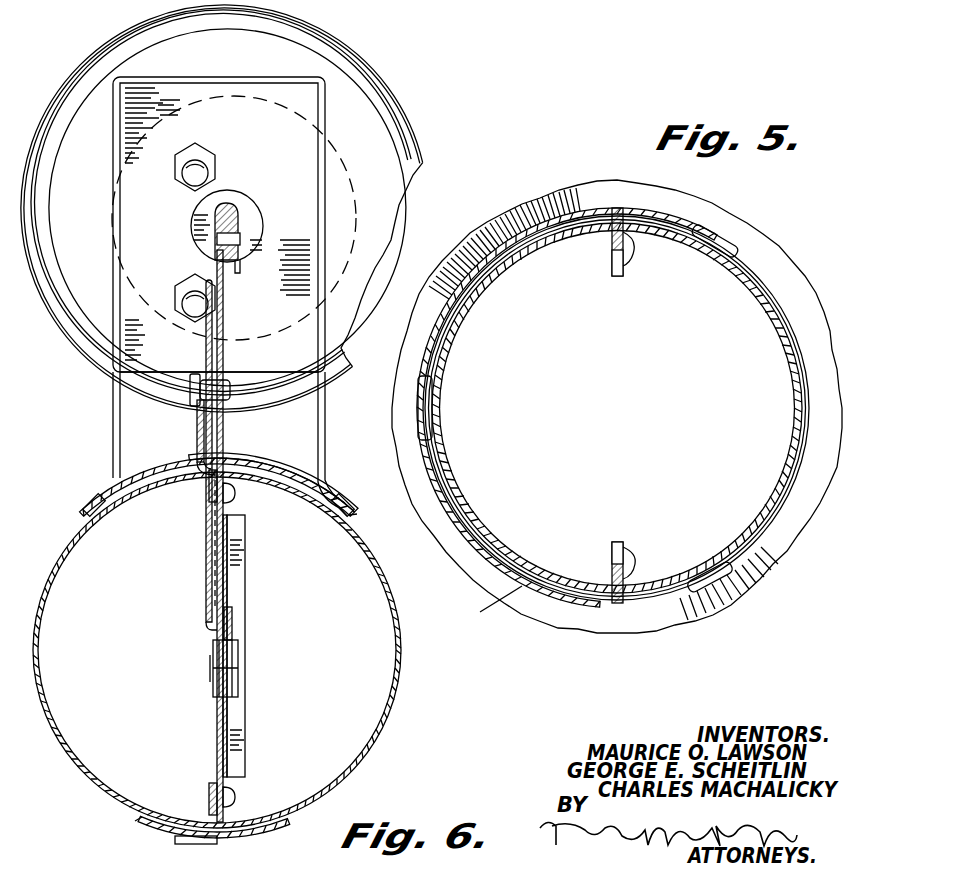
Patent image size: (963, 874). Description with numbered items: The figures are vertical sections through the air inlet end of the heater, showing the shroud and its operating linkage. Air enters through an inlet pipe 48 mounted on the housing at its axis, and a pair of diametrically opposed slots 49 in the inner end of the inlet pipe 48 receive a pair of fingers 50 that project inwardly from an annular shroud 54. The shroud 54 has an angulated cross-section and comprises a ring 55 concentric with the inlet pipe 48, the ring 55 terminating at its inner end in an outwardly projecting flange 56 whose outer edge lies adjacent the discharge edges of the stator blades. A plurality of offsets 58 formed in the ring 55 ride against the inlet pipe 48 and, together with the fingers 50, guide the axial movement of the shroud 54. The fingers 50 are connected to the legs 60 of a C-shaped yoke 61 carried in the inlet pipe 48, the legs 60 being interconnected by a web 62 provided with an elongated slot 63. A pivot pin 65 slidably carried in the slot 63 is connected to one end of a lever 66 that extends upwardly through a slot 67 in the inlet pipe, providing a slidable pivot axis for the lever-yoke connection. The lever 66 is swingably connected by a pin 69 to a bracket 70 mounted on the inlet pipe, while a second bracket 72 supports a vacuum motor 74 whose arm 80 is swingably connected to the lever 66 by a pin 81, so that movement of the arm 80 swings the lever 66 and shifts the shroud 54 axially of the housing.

In FIG. 6, the inlet pipe 48 is at (60, 548).
In FIG. 5, the inlet pipe 48 is at (762, 270).
In FIG. 5, the slots 49 is at (610, 232).
In FIG. 6, the fingers 50 is at (207, 482).
In FIG. 5, the fingers 50 is at (612, 264).
In FIG. 5, the annular shroud 54 is at (522, 586).
In FIG. 6, the ring 55 is at (135, 476).
In FIG. 5, the ring 55 is at (566, 602).
In FIG. 5, the flange 56 is at (590, 187).
In FIG. 5, the offsets 58 is at (724, 240).
In FIG. 6, the legs 60 is at (236, 492).
In FIG. 5, the legs 60 is at (629, 254).
In FIG. 6, the C-shaped yoke 61 is at (222, 736).
In FIG. 6, the web 62 is at (225, 567).
In FIG. 6, the elongated slot 63 is at (231, 636).
In FIG. 6, the pivot pin 65 is at (240, 668).
In FIG. 6, the lever 66 is at (206, 597).
In FIG. 6, the slot 67 is at (232, 465).
In FIG. 6, the pin 69 is at (222, 388).
In FIG. 6, the bracket 70 is at (199, 438).
In FIG. 6, the second bracket 72 is at (296, 172).
In FIG. 6, the vacuum motor 74 is at (362, 62).
In FIG. 6, the arm 80 is at (242, 215).
In FIG. 6, the pin 81 is at (210, 238).